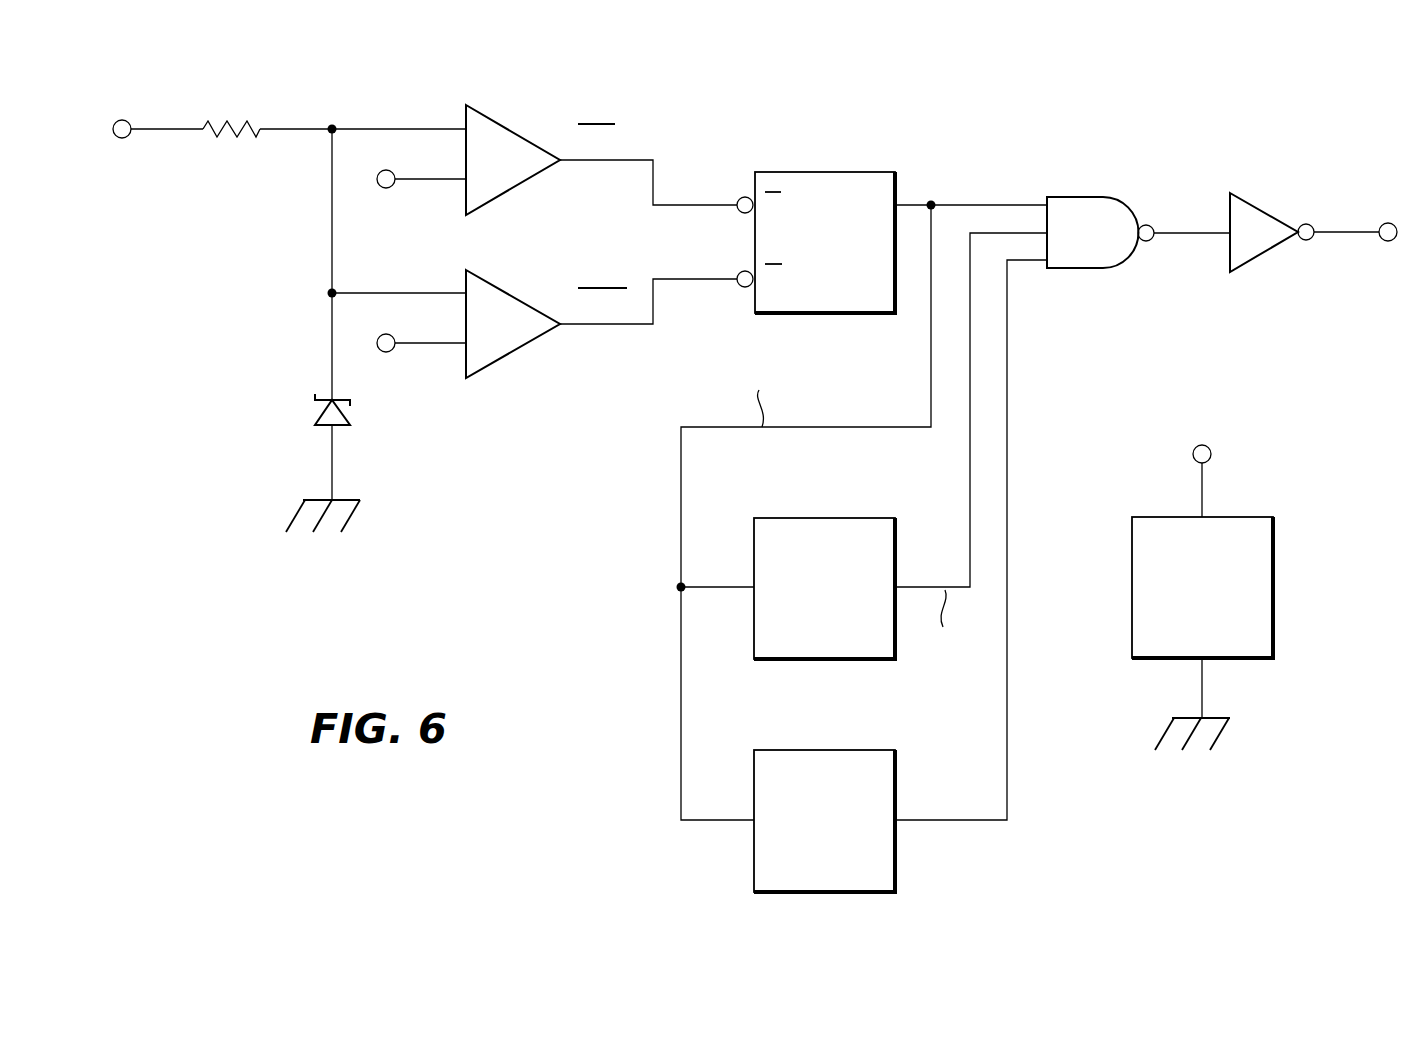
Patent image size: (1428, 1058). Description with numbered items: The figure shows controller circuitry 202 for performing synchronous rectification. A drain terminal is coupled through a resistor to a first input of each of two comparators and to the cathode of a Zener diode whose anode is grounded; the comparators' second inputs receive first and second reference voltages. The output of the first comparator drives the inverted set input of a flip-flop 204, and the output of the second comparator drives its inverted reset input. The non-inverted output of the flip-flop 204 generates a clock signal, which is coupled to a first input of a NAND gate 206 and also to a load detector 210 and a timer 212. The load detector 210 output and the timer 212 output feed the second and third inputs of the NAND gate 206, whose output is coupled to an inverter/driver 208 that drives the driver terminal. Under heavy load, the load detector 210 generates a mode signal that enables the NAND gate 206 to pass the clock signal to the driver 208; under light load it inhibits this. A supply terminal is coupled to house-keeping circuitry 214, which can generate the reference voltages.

The controller circuitry 202 is at (1318, 104).
The flip-flop 204 is at (823, 172).
The NAND gate 206 is at (1078, 197).
The inverter/driver 208 is at (1255, 197).
The load detector 210 is at (824, 588).
The timer 212 is at (824, 821).
The house-keeping circuitry 214 is at (1202, 587).